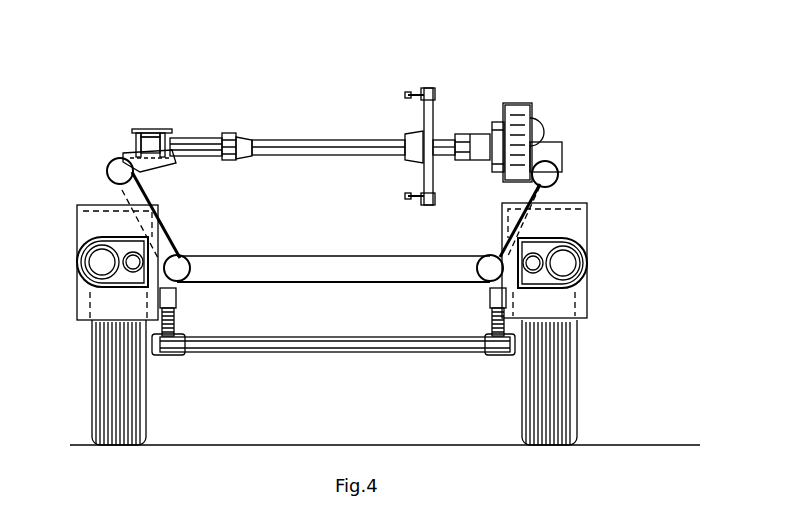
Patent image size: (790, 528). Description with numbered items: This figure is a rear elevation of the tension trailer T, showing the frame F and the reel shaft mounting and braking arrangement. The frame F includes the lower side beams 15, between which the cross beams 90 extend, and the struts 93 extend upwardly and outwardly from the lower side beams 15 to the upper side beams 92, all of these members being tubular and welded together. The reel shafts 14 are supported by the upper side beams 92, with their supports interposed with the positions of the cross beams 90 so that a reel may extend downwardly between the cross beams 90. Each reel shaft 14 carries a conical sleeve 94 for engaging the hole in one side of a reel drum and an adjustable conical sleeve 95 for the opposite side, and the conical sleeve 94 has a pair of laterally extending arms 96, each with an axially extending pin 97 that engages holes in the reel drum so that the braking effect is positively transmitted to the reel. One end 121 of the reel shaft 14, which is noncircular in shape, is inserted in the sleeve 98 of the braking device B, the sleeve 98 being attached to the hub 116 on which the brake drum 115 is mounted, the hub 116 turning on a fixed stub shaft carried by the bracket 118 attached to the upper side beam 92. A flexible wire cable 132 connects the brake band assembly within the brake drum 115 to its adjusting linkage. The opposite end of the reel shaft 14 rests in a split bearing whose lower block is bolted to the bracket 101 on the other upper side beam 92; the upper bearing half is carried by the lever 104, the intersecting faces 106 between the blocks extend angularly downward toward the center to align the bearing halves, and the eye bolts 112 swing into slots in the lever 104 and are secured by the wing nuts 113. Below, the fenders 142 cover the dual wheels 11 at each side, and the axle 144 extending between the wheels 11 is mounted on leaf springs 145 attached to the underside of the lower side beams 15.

The wheels 11 is at (138, 392).
The reel shaft 14 is at (310, 142).
The side beams 15 is at (184, 263).
The cross beams 90 is at (274, 258).
The upper side beams 92 is at (108, 172).
The struts 93 is at (165, 240).
The conical sleeve 94 is at (411, 157).
The adjustable conical sleeve 95 is at (240, 140).
The laterally extending arms 96 is at (422, 106).
The pin 97 is at (408, 95).
The sleeve 98 is at (470, 134).
The bracket 101 is at (150, 172).
The lever 104 is at (172, 131).
The intersecting faces 106 is at (140, 145).
The bolts 112 is at (141, 131).
The wing nuts 113 is at (137, 131).
The brake drum 115 is at (516, 105).
The hub 116 is at (496, 172).
The bracket 118 is at (562, 152).
The end of reel shaft 121 is at (447, 140).
The flexible wire cable 132 is at (541, 120).
The fender 142 is at (82, 215).
The axle 144 is at (345, 338).
The leaf springs 145 is at (178, 318).
The braking device B is at (530, 109).
The frame F is at (185, 251).
The tension trailer T is at (590, 265).